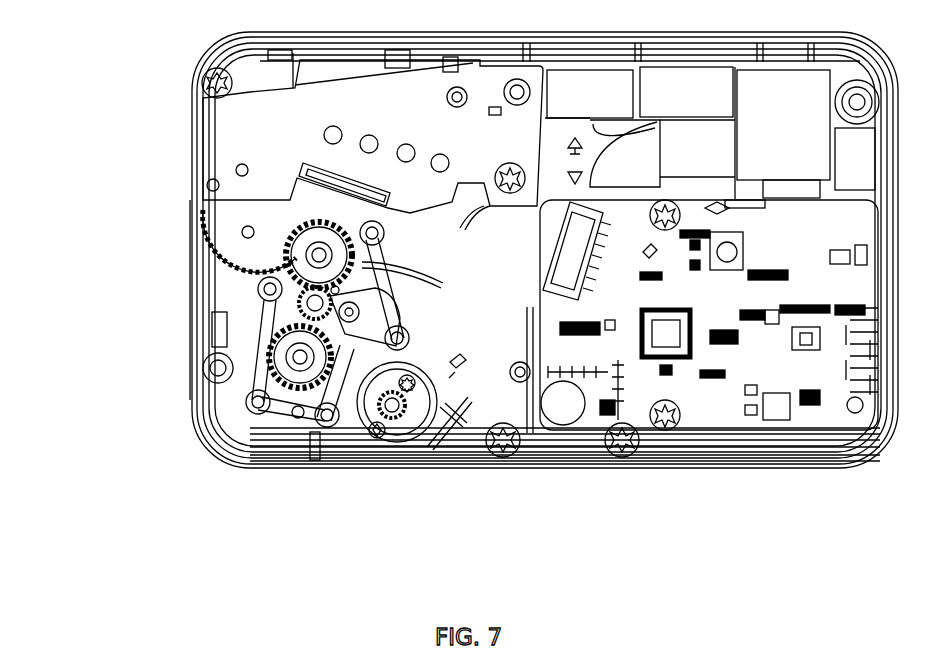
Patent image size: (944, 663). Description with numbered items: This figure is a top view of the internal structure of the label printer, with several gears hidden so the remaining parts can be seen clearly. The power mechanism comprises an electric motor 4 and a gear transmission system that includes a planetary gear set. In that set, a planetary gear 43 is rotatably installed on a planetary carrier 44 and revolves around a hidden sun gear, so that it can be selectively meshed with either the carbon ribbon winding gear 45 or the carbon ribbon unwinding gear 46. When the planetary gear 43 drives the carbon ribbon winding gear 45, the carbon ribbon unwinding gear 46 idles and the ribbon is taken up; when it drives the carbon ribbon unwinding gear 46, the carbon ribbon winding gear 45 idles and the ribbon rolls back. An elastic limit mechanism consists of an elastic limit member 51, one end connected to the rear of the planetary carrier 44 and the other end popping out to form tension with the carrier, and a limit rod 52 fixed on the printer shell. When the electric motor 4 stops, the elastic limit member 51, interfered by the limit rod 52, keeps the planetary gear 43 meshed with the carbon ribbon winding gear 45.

The electric motor 4 is at (402, 432).
The planetary gear 43 is at (260, 289).
The planetary carrier 44 is at (378, 438).
The carbon ribbon winding gear 45 is at (292, 240).
The carbon ribbon unwinding gear 46 is at (268, 360).
The elastic limit member 51 is at (353, 347).
The limit rod 52 is at (330, 425).